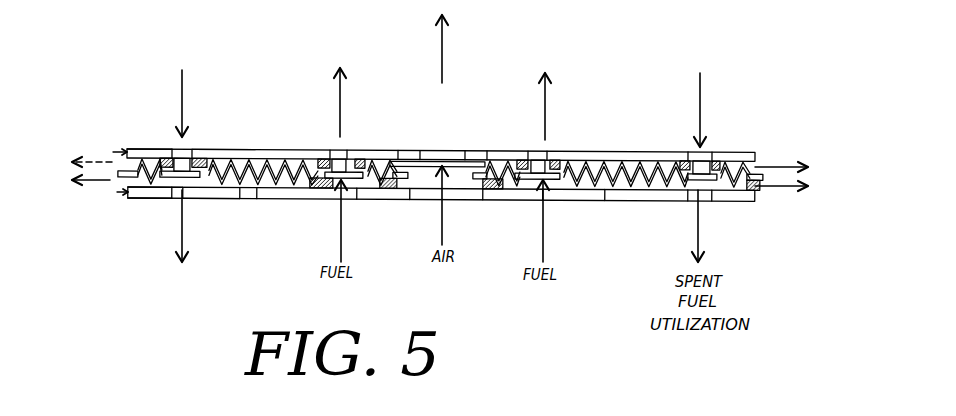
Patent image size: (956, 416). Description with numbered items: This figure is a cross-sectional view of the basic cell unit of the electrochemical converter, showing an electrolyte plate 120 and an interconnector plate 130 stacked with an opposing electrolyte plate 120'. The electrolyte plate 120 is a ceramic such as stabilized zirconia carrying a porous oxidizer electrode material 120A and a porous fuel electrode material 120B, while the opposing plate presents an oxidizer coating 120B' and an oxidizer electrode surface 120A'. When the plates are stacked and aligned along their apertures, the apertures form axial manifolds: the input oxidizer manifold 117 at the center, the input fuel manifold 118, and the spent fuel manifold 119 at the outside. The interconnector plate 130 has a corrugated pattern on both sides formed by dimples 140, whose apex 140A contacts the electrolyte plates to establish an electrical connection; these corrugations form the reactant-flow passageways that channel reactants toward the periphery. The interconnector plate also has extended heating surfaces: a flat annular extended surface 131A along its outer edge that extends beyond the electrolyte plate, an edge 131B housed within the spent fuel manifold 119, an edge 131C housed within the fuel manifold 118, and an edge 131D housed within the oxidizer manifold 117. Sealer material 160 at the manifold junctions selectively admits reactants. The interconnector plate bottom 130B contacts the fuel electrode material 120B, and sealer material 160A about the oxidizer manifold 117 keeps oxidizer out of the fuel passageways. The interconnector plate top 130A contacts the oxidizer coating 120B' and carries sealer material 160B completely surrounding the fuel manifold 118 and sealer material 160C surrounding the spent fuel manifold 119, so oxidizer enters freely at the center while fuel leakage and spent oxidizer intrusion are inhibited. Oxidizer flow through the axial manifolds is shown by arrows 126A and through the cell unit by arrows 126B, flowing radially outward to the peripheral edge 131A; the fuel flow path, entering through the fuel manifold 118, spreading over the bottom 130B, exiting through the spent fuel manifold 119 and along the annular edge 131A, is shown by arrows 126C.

The input oxidizer manifold 117 is at (470, 148).
The input fuel manifold 118 is at (330, 148).
The spent fuel manifold 119 is at (190, 199).
The electrolyte plate 120 is at (90, 211).
The opposing electrolyte plate 120' is at (93, 132).
The oxidizer electrode material 120A is at (137, 231).
The oxidizer electrode surface 120A' is at (163, 135).
The fuel electrode material 120B is at (131, 218).
The oxidizer coating 120B' is at (134, 121).
The oxidizer flow arrows through manifolds 126A is at (444, 48).
The oxidizer flow arrows through cell unit 126B is at (85, 145).
The fuel flow arrows 126C is at (340, 96).
The interconnector plate 130 is at (758, 151).
The interconnector plate top 130A is at (238, 148).
The interconnector plate bottom 130B is at (228, 199).
The flat annular extended surface 131A is at (110, 181).
The extended heating surface edge 131B is at (160, 198).
The extended heating surface edge 131C is at (320, 199).
The extended heating surface edge 131D is at (407, 199).
The dimples 140 is at (218, 148).
The apex 140A is at (258, 148).
The sealer material 160 is at (390, 199).
The sealer material 160A is at (477, 199).
The sealer material 160B is at (360, 148).
The sealer material 160C is at (683, 148).